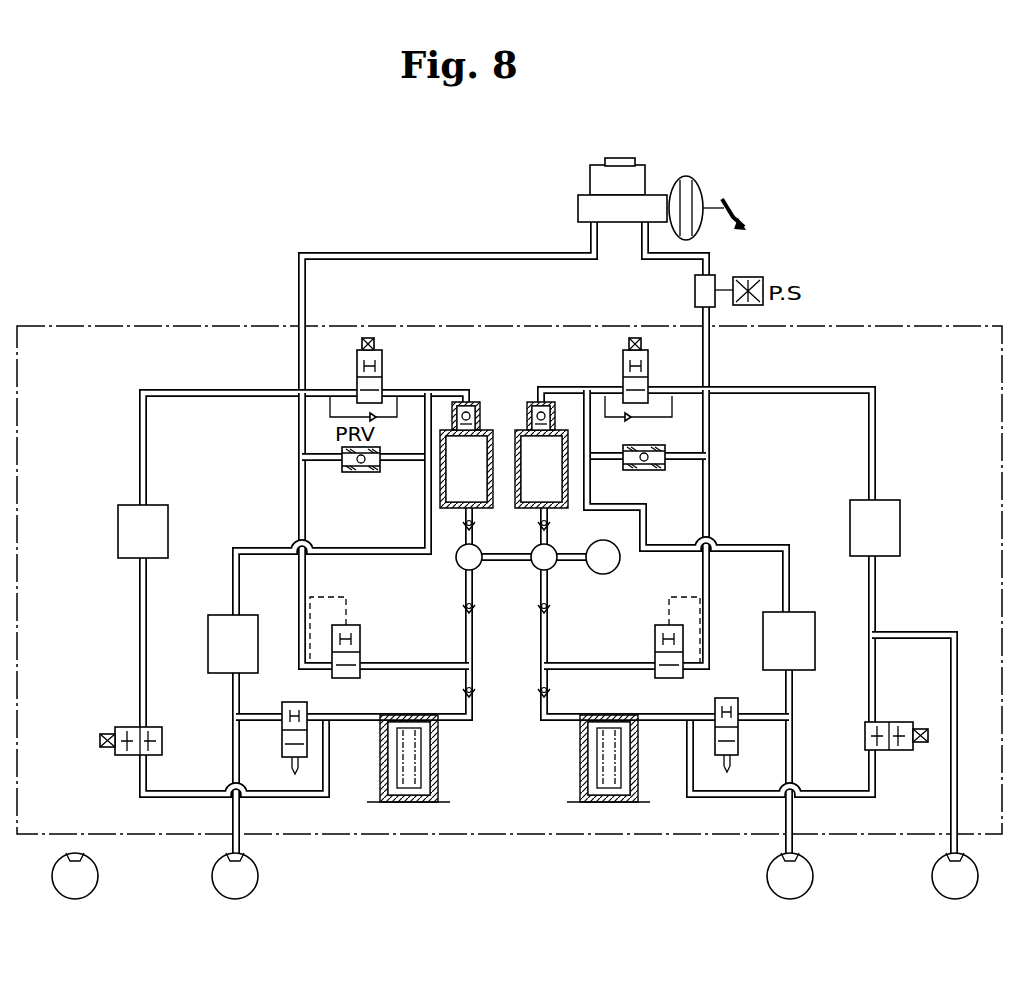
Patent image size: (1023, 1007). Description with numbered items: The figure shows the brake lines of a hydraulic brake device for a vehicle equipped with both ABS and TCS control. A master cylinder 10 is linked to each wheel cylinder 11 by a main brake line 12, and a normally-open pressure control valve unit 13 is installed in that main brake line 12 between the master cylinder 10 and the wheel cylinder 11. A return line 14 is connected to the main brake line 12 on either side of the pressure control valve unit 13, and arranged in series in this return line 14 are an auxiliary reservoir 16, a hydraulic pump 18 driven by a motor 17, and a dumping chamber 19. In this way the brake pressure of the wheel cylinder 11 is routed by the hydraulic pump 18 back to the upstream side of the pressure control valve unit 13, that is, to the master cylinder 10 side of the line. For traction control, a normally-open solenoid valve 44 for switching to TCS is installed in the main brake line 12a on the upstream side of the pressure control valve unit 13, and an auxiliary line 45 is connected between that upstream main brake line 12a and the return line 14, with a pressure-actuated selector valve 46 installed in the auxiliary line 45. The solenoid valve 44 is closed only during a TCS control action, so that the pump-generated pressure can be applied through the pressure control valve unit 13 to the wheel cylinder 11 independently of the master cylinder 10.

The master cylinder 10 is at (580, 197).
The wheel cylinder 11 is at (90, 862).
The main brake line 12 is at (497, 252).
The main brake line 12a is at (230, 548).
The pressure control valve unit 13 is at (128, 505).
The return line 14 is at (290, 702).
The auxiliary reservoir 16 is at (439, 747).
The motor 17 is at (619, 568).
The hydraulic pump 18 is at (543, 571).
The dumping chamber 19 is at (537, 426).
The solenoid valve 44 is at (383, 366).
The auxiliary line 45 is at (299, 494).
The selector valve 46 is at (361, 646).